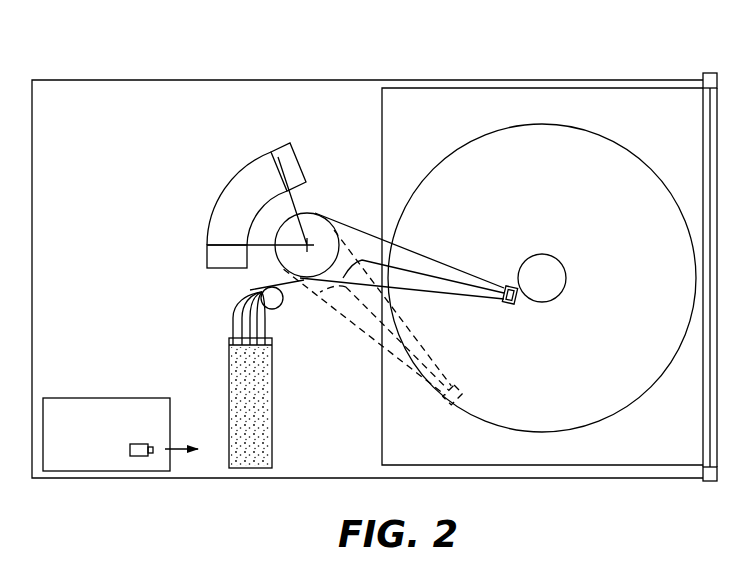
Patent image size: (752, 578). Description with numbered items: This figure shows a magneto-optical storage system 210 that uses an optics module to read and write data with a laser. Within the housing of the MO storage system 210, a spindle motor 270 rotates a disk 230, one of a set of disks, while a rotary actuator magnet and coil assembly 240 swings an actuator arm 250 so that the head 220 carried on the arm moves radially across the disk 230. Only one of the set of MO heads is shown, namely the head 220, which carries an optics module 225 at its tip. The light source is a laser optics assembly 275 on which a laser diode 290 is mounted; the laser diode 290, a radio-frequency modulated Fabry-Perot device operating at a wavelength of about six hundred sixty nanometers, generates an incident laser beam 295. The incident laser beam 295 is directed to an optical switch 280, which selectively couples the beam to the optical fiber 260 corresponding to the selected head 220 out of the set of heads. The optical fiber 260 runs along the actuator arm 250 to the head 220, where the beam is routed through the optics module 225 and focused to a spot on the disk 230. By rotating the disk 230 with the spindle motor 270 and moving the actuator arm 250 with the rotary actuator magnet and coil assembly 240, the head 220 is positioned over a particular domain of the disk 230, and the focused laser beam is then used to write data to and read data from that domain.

The MO storage system 210 is at (464, 64).
The MO head 220 is at (522, 306).
The optics module 225 is at (507, 305).
The disk 230 is at (574, 122).
The rotary actuator magnet and coil assembly 240 is at (264, 171).
The actuator arm 250 is at (416, 258).
The optical fiber 260 is at (464, 272).
The spindle motor 270 is at (544, 262).
The laser optics assembly 275 is at (78, 453).
The optical switch 280 is at (282, 386).
The laser diode 290 is at (138, 458).
The incident laser beam 295 is at (175, 454).